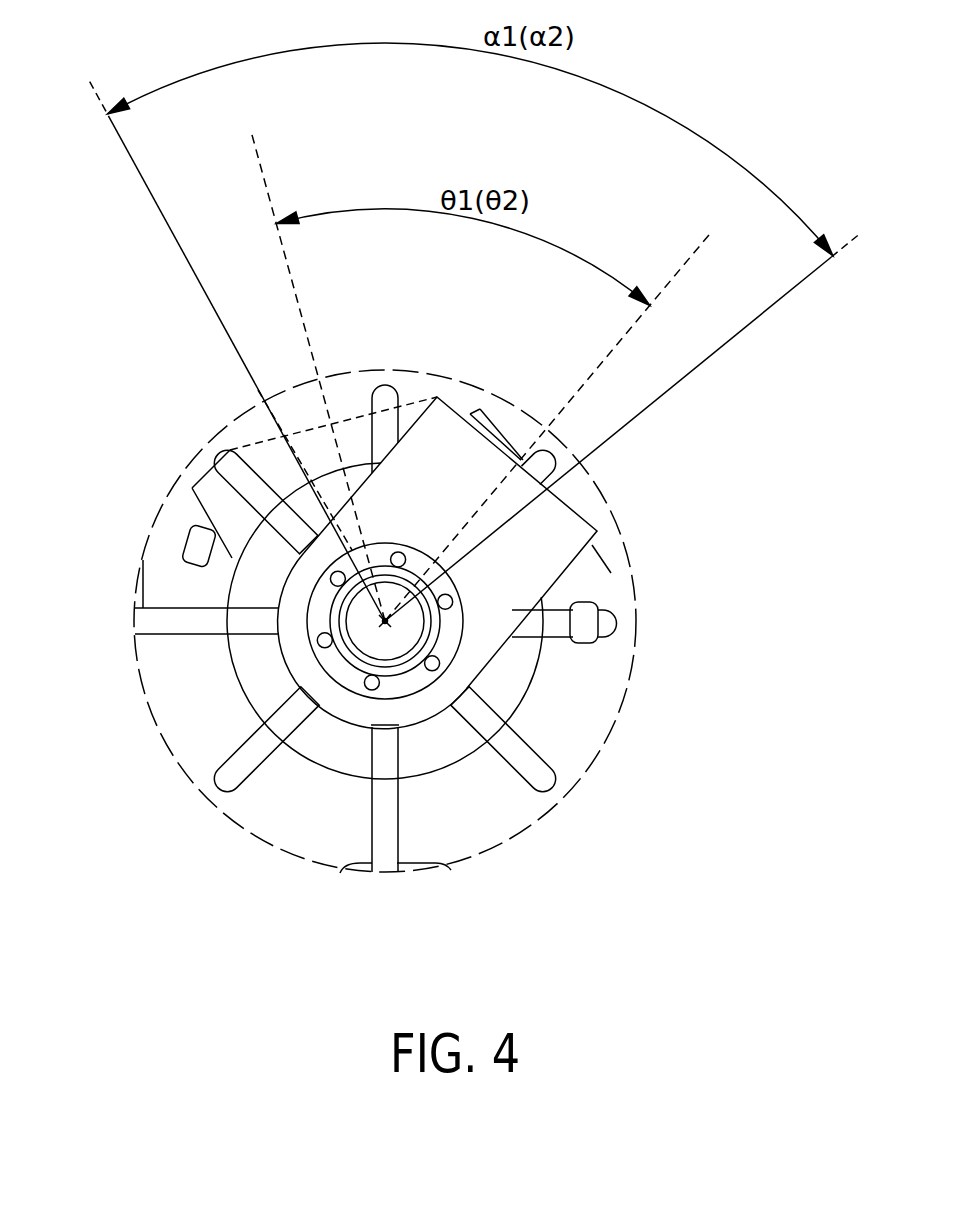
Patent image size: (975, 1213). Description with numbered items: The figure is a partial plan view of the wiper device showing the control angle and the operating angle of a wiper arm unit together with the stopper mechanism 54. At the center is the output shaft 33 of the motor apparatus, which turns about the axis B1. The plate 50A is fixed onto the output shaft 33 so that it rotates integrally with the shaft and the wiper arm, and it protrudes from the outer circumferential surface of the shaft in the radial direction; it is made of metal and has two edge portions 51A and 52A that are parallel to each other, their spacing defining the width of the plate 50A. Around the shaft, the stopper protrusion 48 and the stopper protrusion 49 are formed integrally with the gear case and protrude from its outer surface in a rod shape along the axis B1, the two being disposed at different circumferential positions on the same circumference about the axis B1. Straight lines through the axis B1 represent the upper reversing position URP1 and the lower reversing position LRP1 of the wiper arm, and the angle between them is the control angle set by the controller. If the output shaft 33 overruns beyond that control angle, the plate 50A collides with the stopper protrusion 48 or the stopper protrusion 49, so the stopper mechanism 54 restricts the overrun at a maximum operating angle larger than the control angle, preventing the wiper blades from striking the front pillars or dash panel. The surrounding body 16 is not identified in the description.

The steering wheel body 16 is at (205, 727).
The output shaft 33 is at (400, 645).
The stopper protrusion 48 is at (193, 538).
The stopper protrusion 49 is at (586, 633).
The plate 50A is at (577, 502).
The edge portion 51A is at (384, 543).
The edge portion 52A is at (563, 575).
The stopper mechanism 54 is at (552, 672).
The axis B1 is at (385, 621).
The upper reversing position URP1 is at (267, 177).
The lower reversing position LRP1 is at (680, 264).